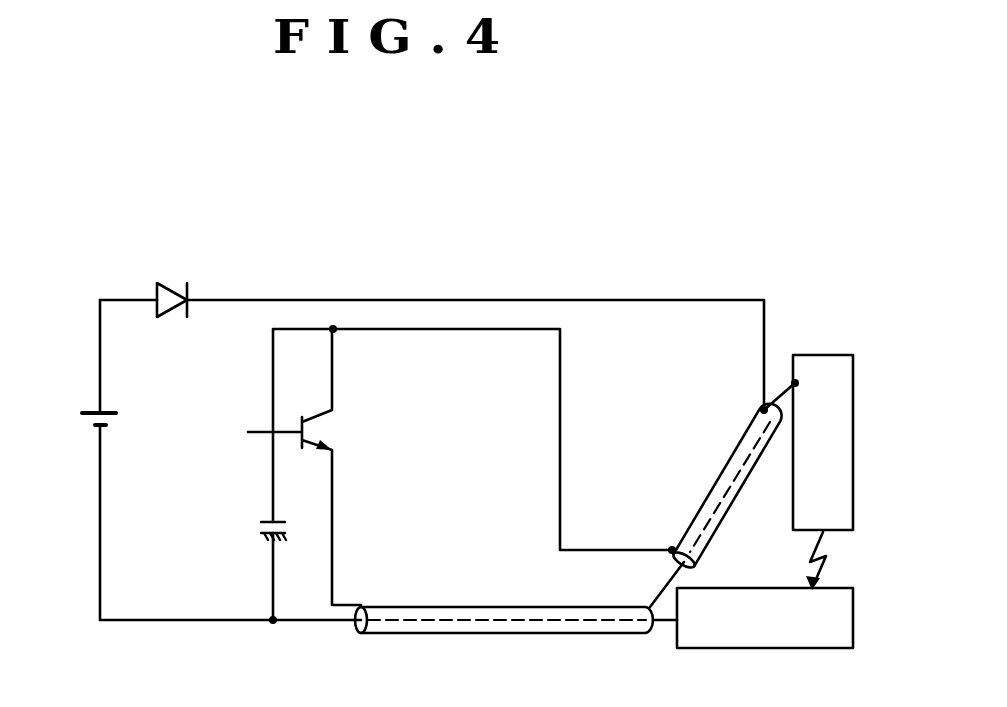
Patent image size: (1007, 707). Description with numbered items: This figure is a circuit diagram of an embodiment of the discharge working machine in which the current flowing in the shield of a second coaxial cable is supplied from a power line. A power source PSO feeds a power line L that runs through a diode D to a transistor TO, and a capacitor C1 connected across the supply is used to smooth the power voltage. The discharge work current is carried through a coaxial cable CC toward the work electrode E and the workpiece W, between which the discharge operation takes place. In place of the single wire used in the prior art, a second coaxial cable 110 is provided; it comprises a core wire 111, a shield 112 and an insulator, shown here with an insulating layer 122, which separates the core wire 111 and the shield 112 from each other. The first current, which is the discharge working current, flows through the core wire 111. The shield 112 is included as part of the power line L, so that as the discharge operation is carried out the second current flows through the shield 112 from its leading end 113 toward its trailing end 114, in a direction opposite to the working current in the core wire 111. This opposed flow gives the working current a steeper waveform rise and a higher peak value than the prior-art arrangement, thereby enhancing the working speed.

The diode D is at (170, 288).
The power line L is at (443, 298).
The power source PSO is at (110, 412).
The transistor TO is at (333, 432).
The capacitor C1 is at (280, 520).
The coaxial cable CC is at (475, 606).
The second coaxial cable 110 is at (723, 470).
The insulating sleeve 122 is at (717, 490).
The shield 112 is at (700, 502).
The leading end 113 is at (764, 410).
The trailing end 114 is at (672, 552).
The core wire 111 is at (718, 500).
The work electrode E is at (840, 355).
The workpiece W is at (845, 588).